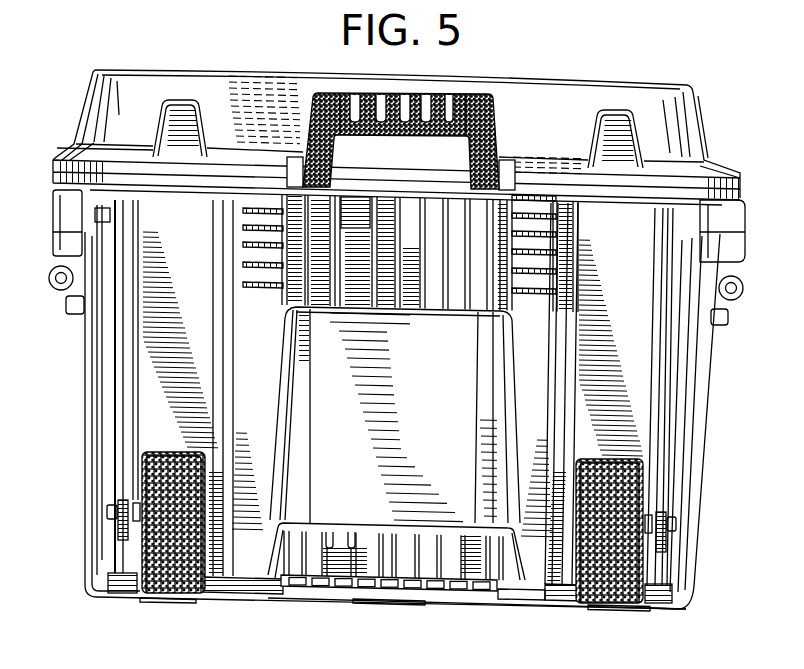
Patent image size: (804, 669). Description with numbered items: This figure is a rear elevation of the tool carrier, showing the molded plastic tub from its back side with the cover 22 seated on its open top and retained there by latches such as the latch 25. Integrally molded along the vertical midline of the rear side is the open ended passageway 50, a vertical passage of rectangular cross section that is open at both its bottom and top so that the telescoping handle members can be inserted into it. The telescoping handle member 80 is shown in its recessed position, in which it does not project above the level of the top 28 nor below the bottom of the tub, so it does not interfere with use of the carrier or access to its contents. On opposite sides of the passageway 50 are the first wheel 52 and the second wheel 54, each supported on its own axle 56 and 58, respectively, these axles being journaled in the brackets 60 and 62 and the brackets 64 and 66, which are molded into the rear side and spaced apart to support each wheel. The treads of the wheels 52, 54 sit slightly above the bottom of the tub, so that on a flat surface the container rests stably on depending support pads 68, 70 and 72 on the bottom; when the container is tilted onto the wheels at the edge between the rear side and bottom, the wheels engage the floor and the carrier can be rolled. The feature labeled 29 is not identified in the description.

The cover 22 is at (112, 95).
The top 28 is at (588, 78).
The telescoping handle member 80 is at (497, 134).
The latch 25 is at (72, 308).
The bracket 60 is at (113, 410).
The bracket 66 is at (670, 381).
The bracket 62 is at (214, 347).
The bracket 64 is at (573, 368).
The first wheel 52 is at (172, 471).
The second wheel 54 is at (616, 514).
The axle 56 is at (107, 517).
The axle 58 is at (676, 532).
The support pad 68 is at (145, 600).
The support pad 72 is at (649, 612).
The passageway 50 is at (449, 395).
The support pad 70 is at (384, 604).
The base 29 is at (498, 611).